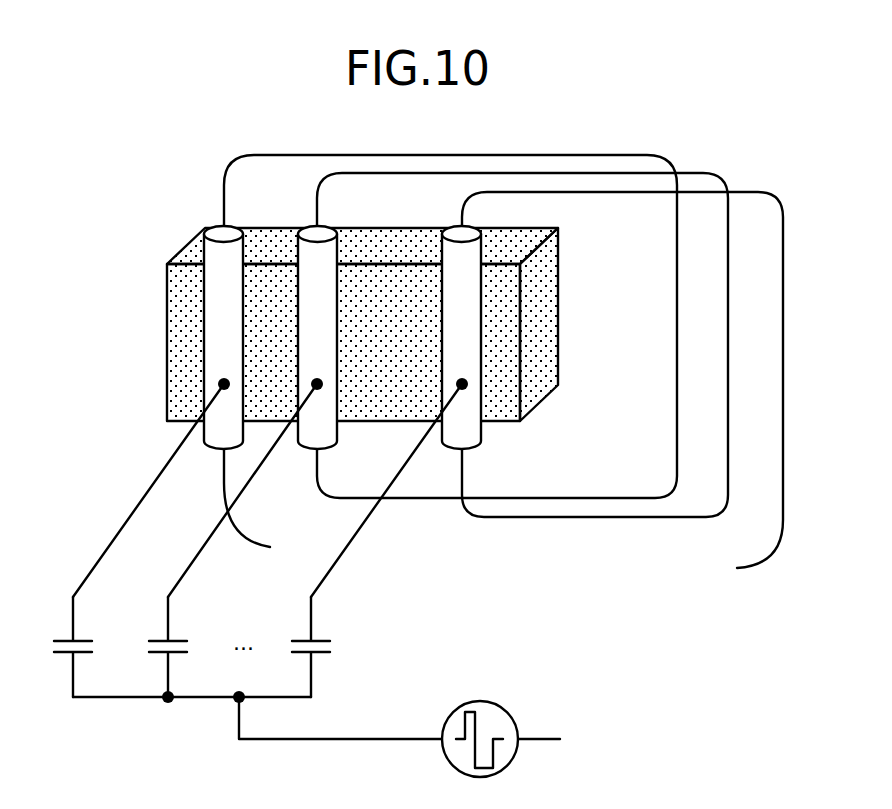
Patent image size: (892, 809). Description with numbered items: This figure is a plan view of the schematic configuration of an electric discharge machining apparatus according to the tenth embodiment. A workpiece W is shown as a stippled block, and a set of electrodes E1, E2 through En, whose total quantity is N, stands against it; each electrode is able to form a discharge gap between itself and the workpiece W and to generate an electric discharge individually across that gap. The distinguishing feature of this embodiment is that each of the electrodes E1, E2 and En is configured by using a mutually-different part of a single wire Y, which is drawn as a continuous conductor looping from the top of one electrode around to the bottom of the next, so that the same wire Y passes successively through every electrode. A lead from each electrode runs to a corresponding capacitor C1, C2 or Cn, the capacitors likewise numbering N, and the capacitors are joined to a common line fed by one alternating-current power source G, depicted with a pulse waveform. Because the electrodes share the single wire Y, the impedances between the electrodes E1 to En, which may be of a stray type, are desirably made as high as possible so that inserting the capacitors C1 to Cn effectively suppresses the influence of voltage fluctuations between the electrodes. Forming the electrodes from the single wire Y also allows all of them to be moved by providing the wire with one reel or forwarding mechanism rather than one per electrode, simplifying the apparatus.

The workpiece W is at (167, 281).
The single wire Y is at (756, 190).
The electrode E1 is at (222, 225).
The electrode E2 is at (313, 225).
The electrode En is at (453, 225).
The capacitor C1 is at (85, 640).
The capacitor C2 is at (180, 640).
The capacitor Cn is at (322, 640).
The alternating-current power source G is at (503, 707).